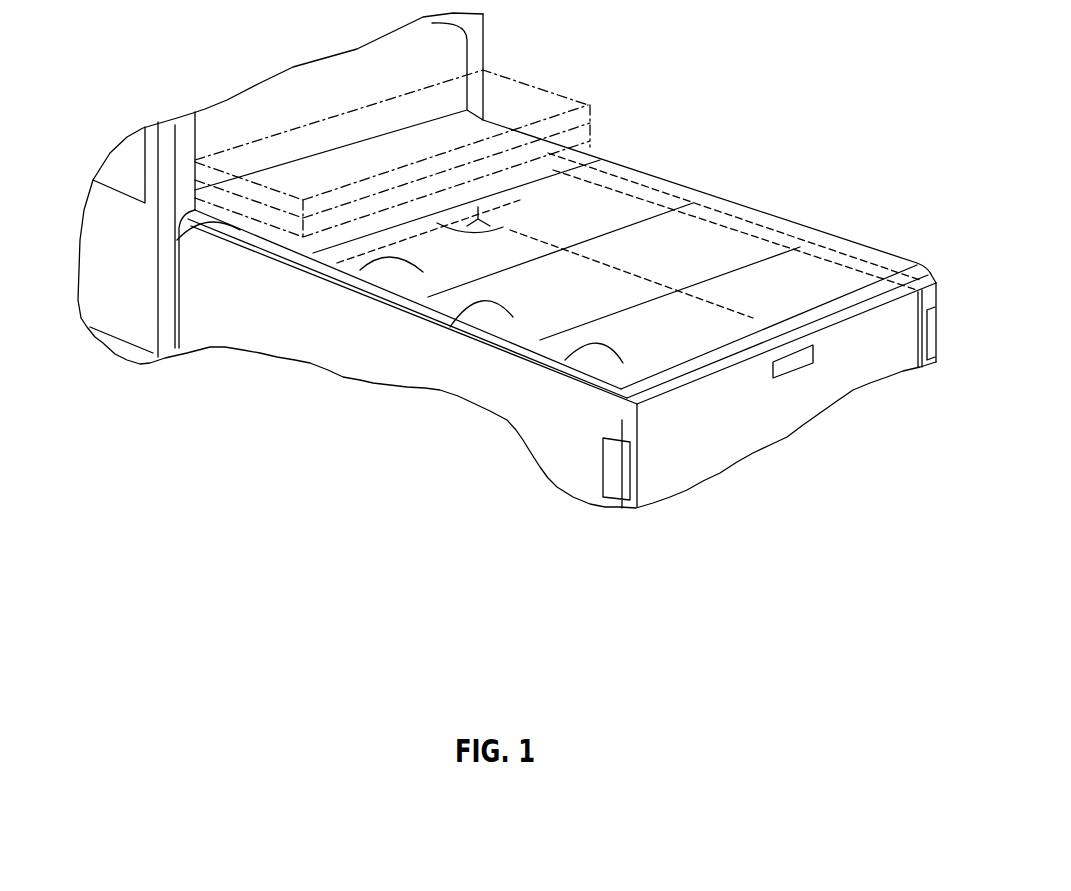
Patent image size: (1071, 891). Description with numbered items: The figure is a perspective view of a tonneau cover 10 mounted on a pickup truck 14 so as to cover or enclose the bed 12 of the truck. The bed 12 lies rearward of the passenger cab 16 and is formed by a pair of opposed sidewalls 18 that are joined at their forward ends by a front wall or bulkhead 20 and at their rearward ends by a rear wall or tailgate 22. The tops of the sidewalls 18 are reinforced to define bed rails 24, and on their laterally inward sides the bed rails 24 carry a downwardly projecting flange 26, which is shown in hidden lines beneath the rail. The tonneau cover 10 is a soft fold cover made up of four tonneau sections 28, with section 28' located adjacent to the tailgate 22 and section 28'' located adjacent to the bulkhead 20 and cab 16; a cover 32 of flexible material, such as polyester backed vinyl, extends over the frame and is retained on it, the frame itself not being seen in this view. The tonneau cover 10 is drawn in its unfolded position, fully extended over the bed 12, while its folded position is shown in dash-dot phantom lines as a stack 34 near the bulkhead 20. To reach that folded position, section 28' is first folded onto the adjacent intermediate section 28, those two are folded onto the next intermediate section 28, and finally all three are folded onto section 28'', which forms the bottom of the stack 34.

The tonneau cover 10 is at (860, 145).
The bed 12 is at (212, 305).
The pickup truck 14 is at (520, 36).
The cab 16 is at (100, 262).
The sidewalls 18 is at (830, 287).
The front wall/bulkhead 20 is at (440, 227).
The rear wall/tailgate 22 is at (713, 435).
The bed rails 24 is at (712, 205).
The flange 26 is at (760, 237).
The tonneau sections 28 is at (398, 353).
The tonneau section 28' is at (556, 416).
The tonneau section 28'' is at (159, 315).
The cover 32 is at (668, 257).
The stack 34 is at (585, 92).